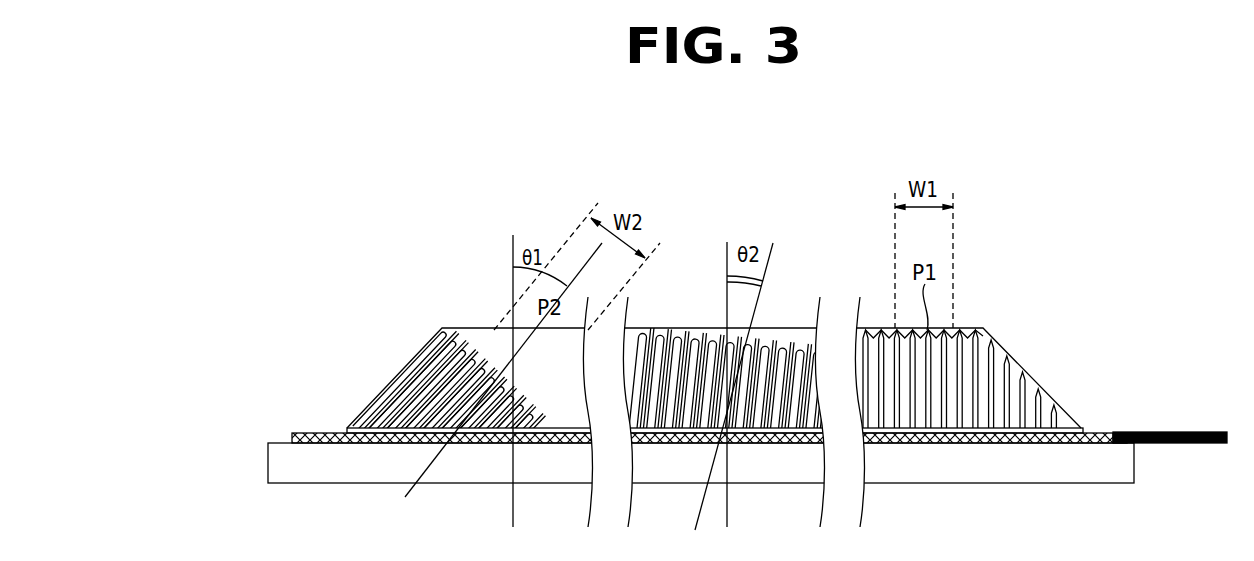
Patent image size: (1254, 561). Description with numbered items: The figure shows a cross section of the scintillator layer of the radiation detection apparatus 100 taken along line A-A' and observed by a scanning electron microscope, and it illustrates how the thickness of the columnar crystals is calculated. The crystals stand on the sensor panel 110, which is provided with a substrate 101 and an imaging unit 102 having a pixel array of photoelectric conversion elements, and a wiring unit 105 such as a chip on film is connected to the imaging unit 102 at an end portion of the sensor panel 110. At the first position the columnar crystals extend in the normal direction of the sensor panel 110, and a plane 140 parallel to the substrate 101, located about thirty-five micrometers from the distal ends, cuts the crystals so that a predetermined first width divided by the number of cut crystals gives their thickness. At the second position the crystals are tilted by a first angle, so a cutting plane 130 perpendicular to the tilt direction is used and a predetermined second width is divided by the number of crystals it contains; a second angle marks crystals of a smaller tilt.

The radiation detection apparatus 100 is at (717, 358).
The substrate 101 is at (282, 463).
The imaging unit 102 is at (292, 438).
The wiring unit 105 is at (1193, 431).
The sensor panel 110 is at (623, 426).
The cutting plane 130 is at (478, 370).
The plane parallel to the substrate 140 is at (937, 348).